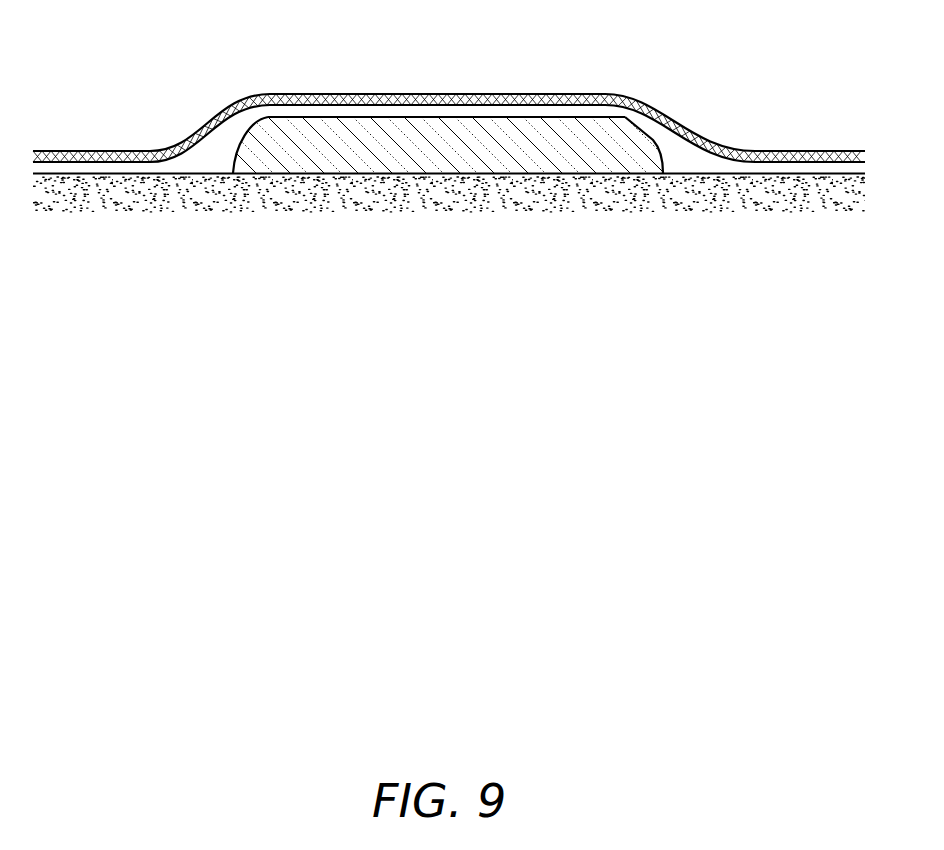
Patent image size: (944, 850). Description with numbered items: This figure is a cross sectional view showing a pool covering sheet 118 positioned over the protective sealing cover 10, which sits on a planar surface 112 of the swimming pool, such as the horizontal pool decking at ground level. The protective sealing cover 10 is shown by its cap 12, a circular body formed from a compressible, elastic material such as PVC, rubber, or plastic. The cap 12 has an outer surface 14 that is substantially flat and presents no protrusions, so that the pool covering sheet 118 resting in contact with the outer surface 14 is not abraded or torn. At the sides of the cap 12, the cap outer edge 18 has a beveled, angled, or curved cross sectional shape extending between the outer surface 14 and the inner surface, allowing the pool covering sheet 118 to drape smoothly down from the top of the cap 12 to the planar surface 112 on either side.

The protective sealing cover 10 is at (449, 98).
The cap 12 is at (655, 141).
The outer surface 14 is at (493, 116).
The cap outer edge 18 is at (230, 168).
The planar surface 112 is at (252, 175).
The pool covering sheet 118 is at (309, 93).